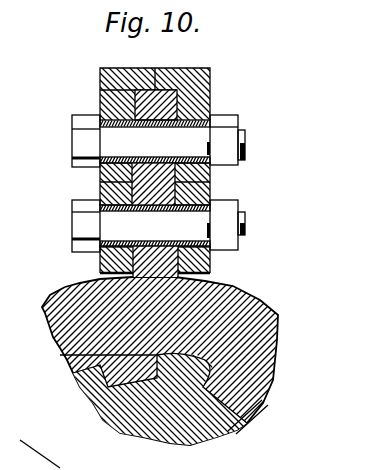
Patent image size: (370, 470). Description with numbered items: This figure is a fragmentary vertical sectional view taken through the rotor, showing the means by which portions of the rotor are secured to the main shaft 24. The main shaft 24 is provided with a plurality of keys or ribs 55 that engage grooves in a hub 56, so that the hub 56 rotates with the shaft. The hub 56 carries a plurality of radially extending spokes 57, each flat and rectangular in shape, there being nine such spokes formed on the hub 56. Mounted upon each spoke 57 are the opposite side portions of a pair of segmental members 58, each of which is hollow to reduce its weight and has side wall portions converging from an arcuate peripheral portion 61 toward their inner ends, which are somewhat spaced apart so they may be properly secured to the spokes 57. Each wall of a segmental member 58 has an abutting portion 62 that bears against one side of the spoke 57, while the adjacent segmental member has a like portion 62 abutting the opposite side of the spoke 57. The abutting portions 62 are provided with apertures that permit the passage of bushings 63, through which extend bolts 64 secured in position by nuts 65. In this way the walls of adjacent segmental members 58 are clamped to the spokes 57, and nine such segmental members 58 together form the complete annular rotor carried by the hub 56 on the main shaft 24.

The main shaft 24 is at (237, 429).
The keys or ribs 55 is at (75, 373).
The hub 56 is at (225, 302).
The spoke 57 is at (100, 184).
The segmental member 58 is at (166, 68).
The arcuate peripheral portion 61 is at (64, 455).
The abutting portion 62 is at (112, 88).
The bushing 63 is at (192, 121).
The bolt 64 is at (113, 142).
The nut 65 is at (218, 150).